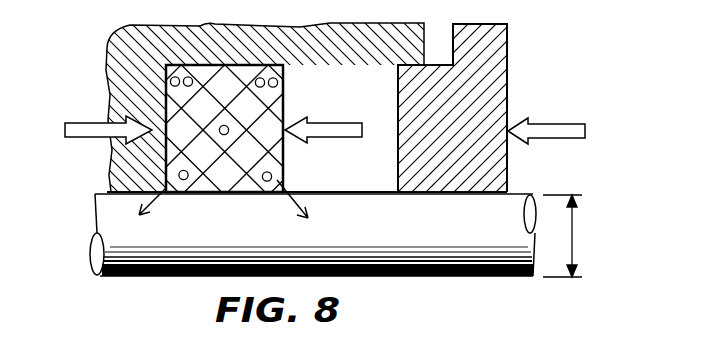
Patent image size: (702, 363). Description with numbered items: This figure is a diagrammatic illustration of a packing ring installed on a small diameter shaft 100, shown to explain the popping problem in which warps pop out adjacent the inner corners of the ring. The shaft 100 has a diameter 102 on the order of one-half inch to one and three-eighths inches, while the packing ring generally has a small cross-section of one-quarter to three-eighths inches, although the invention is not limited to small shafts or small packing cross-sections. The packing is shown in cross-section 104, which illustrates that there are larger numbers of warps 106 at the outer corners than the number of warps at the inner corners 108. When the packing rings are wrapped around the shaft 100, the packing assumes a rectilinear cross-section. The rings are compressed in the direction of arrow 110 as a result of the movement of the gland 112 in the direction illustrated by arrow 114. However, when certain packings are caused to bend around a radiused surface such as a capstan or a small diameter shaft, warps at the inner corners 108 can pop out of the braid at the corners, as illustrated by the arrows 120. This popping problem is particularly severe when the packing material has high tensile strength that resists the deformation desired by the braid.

The shaft 100 is at (452, 242).
The diameter 102 is at (573, 232).
The cross-section 104 is at (222, 83).
The warps 106 is at (187, 76).
The inner corners 108 is at (262, 194).
The arrow 110 is at (94, 123).
The gland 112 is at (462, 100).
The arrow 114 is at (550, 124).
The arrows 120 is at (110, 192).